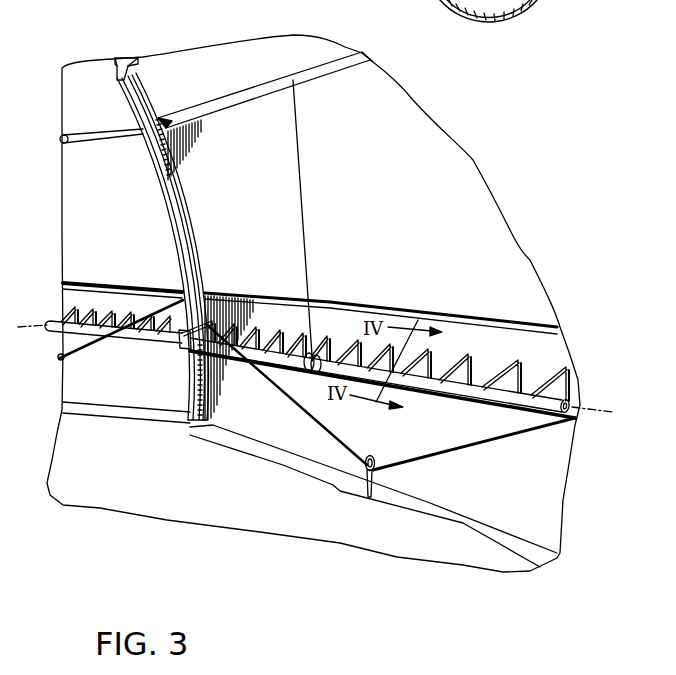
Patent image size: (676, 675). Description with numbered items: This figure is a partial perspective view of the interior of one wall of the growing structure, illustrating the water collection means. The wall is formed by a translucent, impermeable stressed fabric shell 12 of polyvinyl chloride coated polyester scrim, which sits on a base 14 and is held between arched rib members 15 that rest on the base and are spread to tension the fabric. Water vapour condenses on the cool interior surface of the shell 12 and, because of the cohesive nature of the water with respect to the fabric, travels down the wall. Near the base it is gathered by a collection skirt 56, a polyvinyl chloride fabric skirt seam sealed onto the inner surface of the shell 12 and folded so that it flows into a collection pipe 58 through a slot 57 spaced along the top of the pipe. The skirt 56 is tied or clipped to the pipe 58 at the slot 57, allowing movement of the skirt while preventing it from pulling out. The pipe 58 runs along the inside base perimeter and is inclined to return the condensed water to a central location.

The stressed fabric shell 12 is at (440, 190).
The base 14 is at (149, 483).
The arched rib member 15 is at (152, 86).
The collection skirt 56 is at (483, 367).
The slot 57 is at (538, 391).
The collection pipe 58 is at (433, 385).